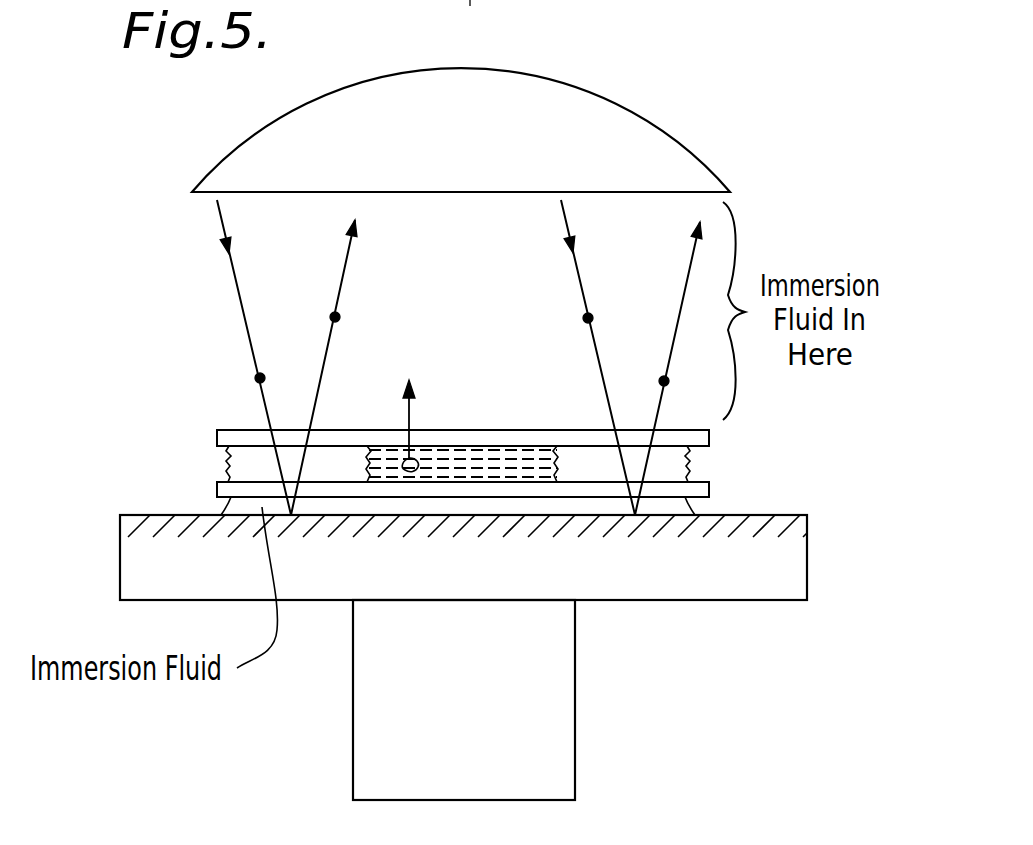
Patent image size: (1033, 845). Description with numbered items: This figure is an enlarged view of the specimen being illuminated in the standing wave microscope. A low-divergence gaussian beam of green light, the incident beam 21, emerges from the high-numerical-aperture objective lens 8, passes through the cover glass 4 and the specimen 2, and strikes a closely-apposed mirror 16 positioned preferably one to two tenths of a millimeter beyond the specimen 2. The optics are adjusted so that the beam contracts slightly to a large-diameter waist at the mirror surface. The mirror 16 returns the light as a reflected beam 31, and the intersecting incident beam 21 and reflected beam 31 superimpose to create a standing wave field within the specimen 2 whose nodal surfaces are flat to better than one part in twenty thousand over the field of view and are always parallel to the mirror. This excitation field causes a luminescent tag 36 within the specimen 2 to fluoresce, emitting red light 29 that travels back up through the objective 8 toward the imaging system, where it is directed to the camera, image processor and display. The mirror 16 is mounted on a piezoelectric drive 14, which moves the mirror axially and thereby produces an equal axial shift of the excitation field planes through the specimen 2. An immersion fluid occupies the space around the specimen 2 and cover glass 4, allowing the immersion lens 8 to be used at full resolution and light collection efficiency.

The objective lens 8 is at (472, 136).
The incident beam 21 is at (305, 291).
The reflected beam 31 is at (652, 291).
The cover glass 4 is at (217, 490).
The specimen 2 is at (558, 471).
The luminescent tag 36 is at (403, 472).
The red light 29 is at (412, 415).
The mirror 16 is at (597, 586).
The piezoelectric drive 14 is at (470, 699).